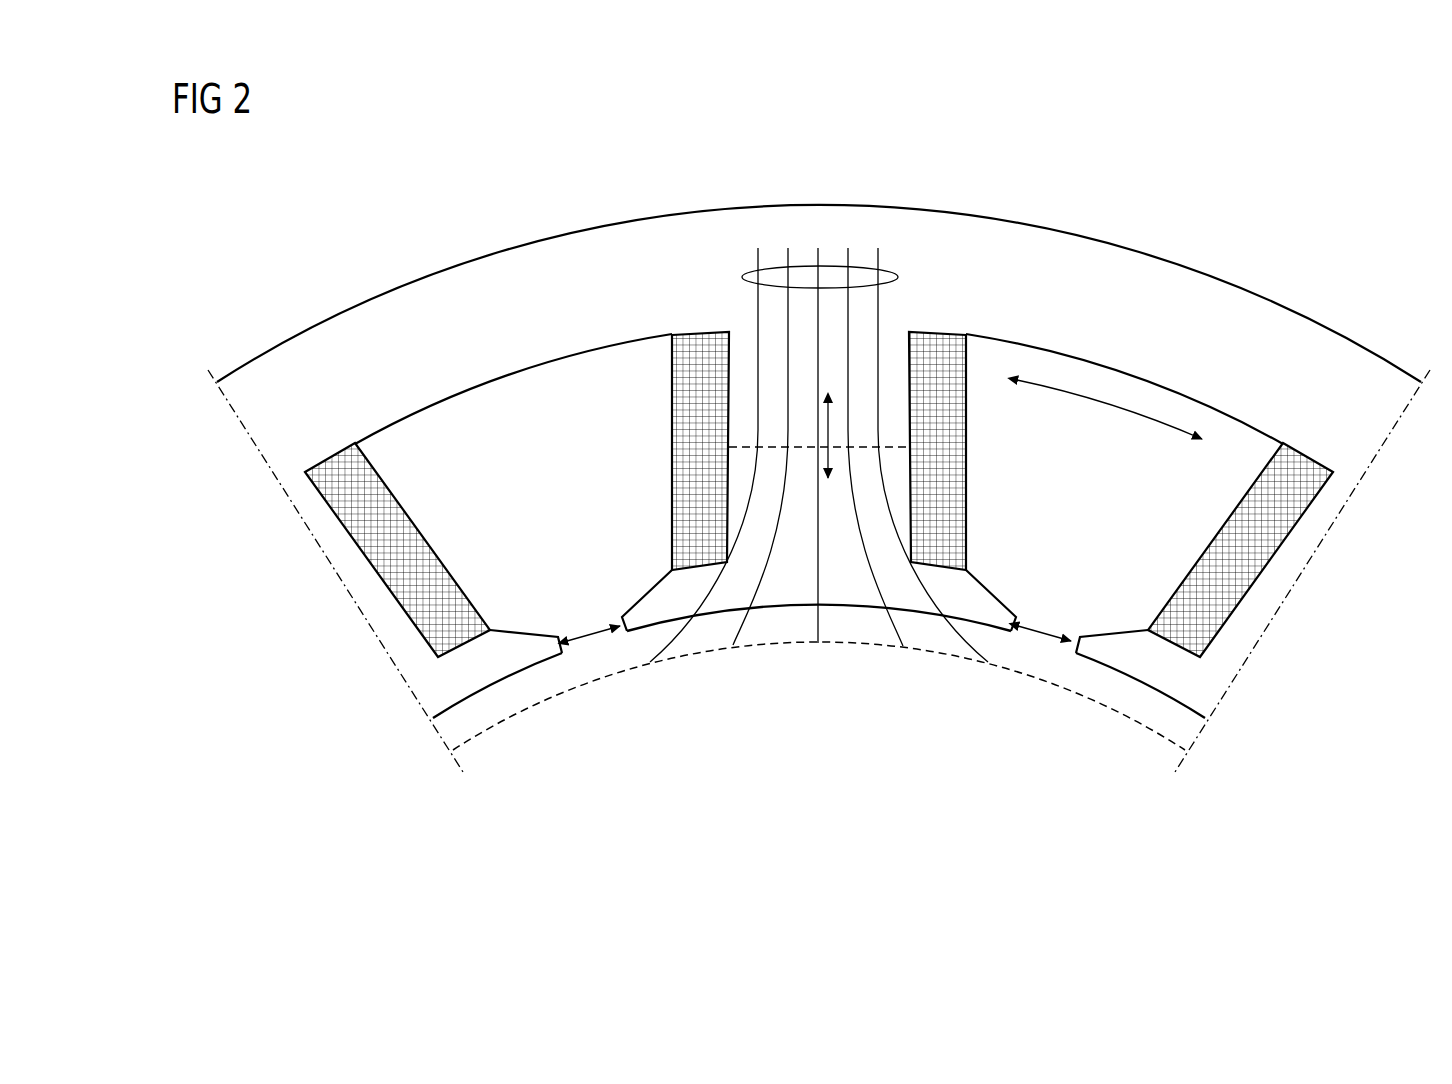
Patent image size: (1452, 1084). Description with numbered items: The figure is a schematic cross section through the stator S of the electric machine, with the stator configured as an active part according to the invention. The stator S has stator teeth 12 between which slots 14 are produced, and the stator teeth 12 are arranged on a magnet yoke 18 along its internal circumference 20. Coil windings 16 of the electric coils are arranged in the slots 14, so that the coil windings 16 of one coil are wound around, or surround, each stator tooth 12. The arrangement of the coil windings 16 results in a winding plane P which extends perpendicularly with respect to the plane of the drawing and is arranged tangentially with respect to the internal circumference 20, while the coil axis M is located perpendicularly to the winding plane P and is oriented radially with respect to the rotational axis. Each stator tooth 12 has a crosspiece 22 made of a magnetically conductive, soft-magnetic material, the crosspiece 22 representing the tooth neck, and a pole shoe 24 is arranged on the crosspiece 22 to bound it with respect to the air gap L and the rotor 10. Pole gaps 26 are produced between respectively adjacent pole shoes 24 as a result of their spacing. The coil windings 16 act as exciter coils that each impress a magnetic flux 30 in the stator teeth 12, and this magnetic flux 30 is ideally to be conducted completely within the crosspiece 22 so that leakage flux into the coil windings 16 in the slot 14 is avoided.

The rotor 10 is at (770, 648).
The stator tooth 12 is at (847, 632).
The slot 14 is at (560, 504).
The coil winding 16 is at (686, 446).
The magnet yoke 18 is at (1104, 309).
The internal circumference 20 is at (1122, 400).
The crosspiece 22 is at (740, 402).
The pole shoe 24 is at (982, 606).
The pole gap 26 is at (592, 632).
The magnetic flux 30 is at (898, 277).
The stator S is at (1246, 287).
The winding plane P is at (797, 447).
The coil axis M is at (830, 425).
The air gap L is at (993, 648).